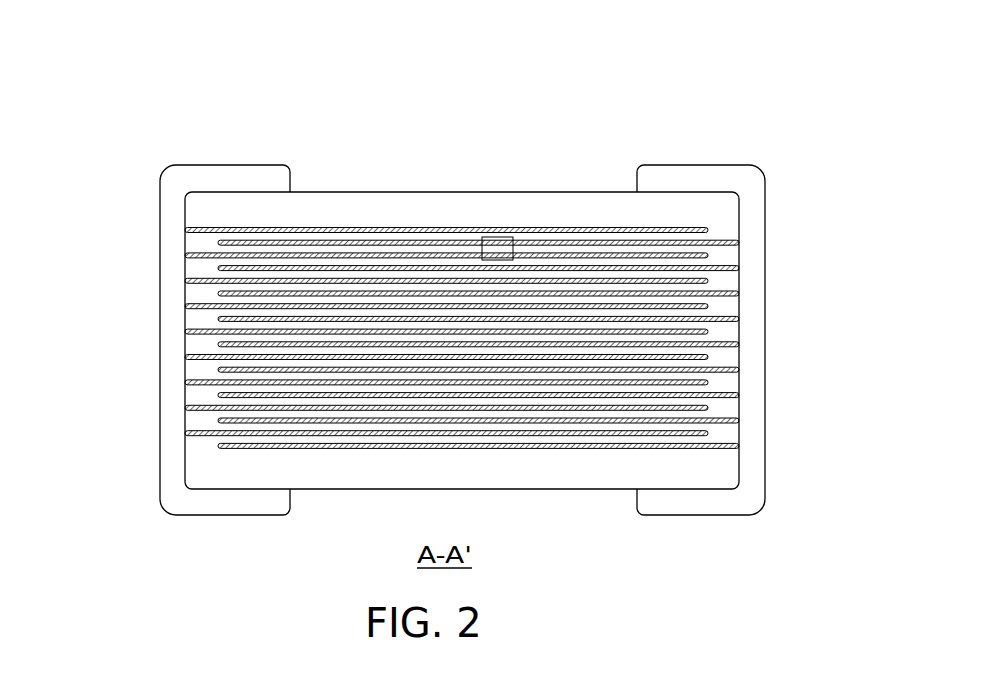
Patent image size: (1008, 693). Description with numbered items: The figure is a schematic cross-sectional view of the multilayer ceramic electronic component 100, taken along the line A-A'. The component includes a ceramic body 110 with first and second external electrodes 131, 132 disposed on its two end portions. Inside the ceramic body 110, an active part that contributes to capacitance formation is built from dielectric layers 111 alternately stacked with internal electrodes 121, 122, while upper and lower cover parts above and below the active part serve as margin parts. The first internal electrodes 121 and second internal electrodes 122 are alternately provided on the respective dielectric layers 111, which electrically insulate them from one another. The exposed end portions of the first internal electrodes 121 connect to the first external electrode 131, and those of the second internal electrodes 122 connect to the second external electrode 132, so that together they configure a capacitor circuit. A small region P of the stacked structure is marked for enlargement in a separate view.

The multilayer ceramic electronic component 100 is at (466, 63).
The ceramic body 110 is at (350, 192).
The dielectric layers 111 is at (705, 236).
The first internal electrodes 121 is at (205, 251).
The second internal electrodes 122 is at (716, 270).
The first external electrode 131 is at (178, 183).
The second external electrode 132 is at (680, 178).
The region P is at (512, 240).